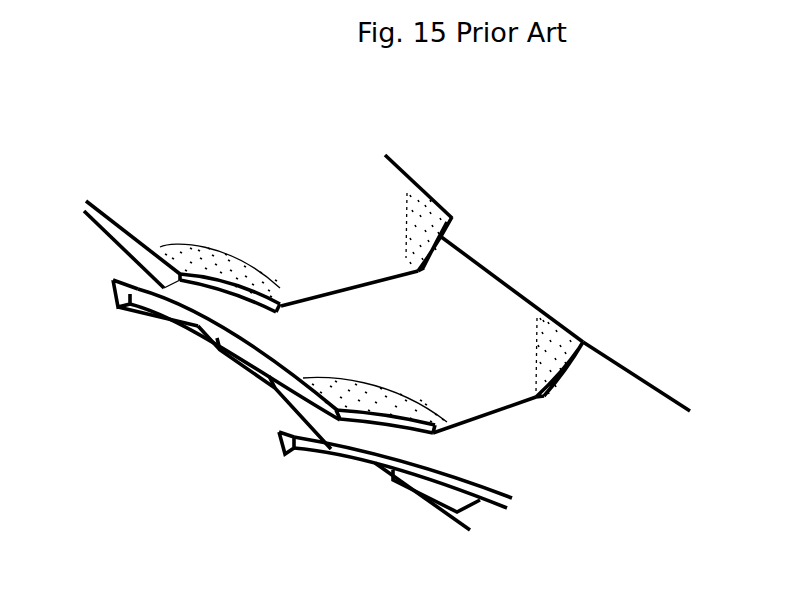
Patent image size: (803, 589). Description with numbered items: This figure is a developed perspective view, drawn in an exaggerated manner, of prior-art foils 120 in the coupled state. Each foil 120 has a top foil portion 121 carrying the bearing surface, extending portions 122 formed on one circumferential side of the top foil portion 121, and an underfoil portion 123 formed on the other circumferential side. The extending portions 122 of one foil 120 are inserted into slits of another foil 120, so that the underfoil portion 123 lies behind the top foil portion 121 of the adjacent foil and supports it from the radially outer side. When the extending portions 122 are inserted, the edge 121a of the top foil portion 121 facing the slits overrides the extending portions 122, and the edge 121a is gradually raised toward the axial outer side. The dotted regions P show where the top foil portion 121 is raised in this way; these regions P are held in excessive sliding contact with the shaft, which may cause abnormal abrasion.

The foil 120 is at (414, 337).
The top foil portion 121 is at (474, 310).
The edge of the top foil portion 121a is at (441, 236).
The extending portions 122 is at (148, 300).
The underfoil portion 123 is at (242, 364).
The regions P is at (423, 197).